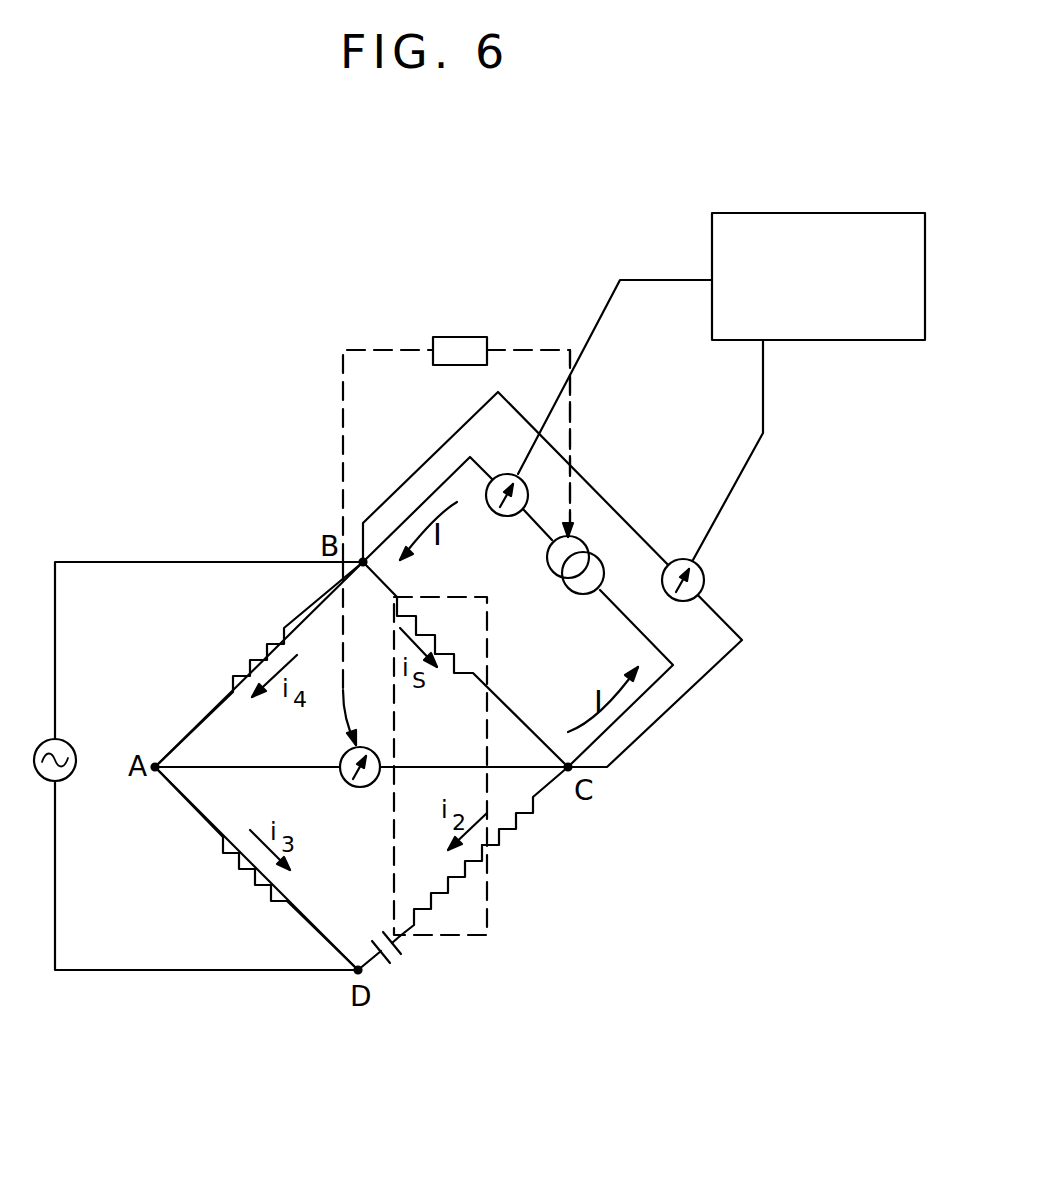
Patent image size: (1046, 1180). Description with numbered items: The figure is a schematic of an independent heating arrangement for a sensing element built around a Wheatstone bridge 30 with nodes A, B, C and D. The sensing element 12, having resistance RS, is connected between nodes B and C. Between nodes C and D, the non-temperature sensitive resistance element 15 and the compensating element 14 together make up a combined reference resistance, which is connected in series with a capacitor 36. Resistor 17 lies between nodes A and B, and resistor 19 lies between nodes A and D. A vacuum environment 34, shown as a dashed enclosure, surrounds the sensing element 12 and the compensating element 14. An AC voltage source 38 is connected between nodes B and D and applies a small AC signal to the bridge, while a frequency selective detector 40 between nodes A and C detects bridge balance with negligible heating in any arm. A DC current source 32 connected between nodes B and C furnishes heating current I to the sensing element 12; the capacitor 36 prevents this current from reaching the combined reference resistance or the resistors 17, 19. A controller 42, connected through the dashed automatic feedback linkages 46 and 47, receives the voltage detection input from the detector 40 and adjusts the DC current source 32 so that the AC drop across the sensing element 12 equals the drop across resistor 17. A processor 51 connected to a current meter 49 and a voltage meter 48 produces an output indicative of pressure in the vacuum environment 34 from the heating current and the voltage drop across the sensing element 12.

The sensing element 12 is at (458, 650).
The compensating element 14 is at (450, 886).
The non-temperature sensitive resistance element 15 is at (517, 823).
The resistor 17 is at (266, 654).
The resistor 19 is at (260, 866).
The Wheatstone bridge 30 is at (270, 537).
The DC current source 32 is at (597, 552).
The vacuum environment 34 is at (463, 920).
The capacitor 36 is at (390, 960).
The AC voltage source 38 is at (68, 742).
The frequency selective detector 40 is at (340, 758).
The controller 42 is at (456, 336).
The automatic feedback linkage 46 is at (582, 413).
The automatic feedback linkage 47 is at (345, 456).
The voltage meter 48 is at (704, 566).
The current meter 49 is at (498, 474).
The processor 51 is at (810, 213).